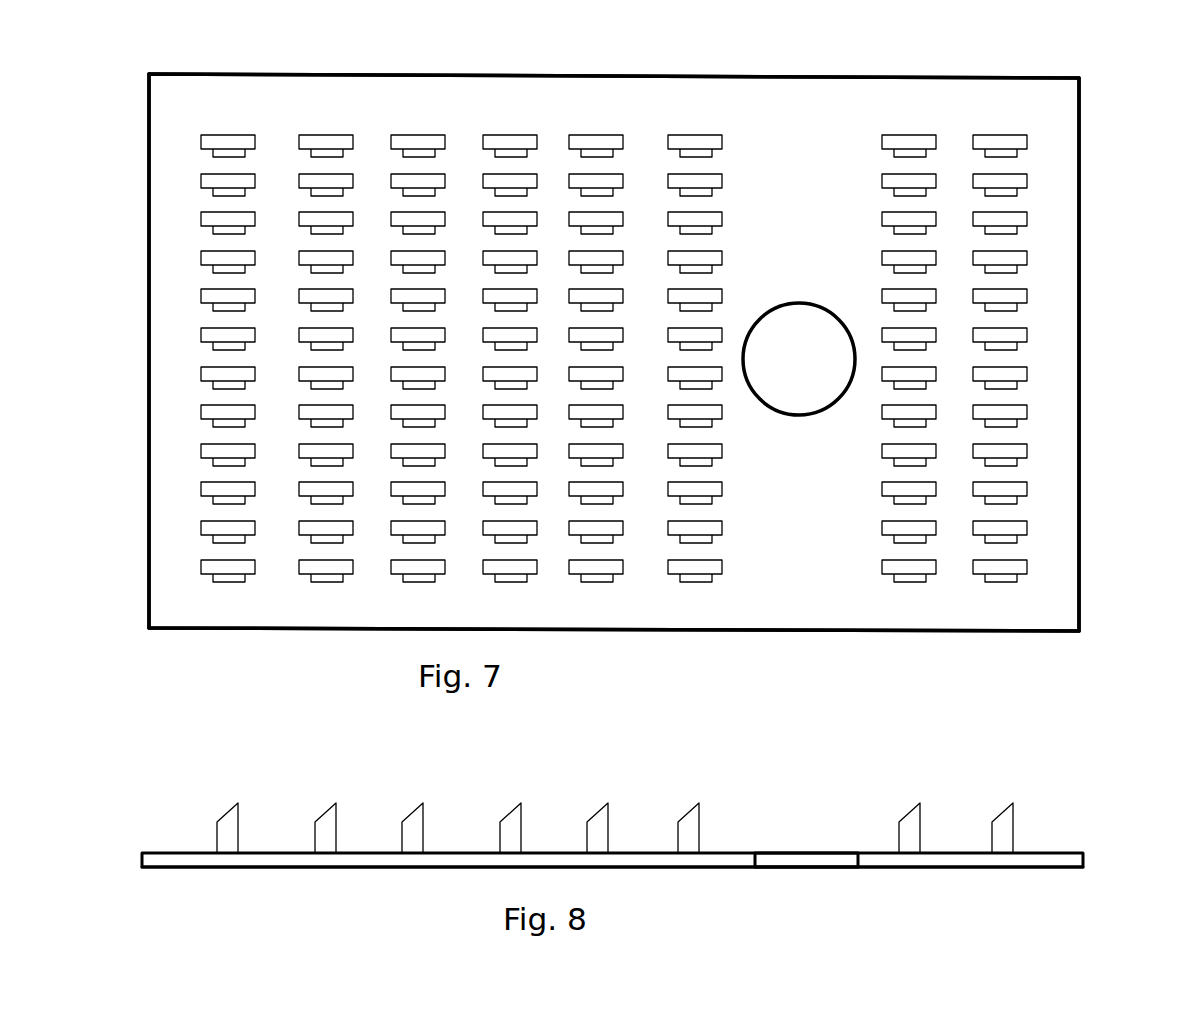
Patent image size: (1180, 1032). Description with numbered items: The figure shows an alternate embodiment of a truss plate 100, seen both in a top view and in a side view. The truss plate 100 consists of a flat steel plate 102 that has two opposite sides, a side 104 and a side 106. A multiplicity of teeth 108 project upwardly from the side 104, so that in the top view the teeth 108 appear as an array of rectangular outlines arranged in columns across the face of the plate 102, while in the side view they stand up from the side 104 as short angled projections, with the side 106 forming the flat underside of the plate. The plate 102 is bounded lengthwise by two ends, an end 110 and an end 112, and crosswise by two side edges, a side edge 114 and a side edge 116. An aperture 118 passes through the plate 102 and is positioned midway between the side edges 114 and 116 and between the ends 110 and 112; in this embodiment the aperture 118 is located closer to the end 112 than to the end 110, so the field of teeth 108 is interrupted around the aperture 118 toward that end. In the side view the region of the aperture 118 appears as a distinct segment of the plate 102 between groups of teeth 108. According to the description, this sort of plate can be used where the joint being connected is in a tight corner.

In FIG. 7, the truss plate 100 is at (1102, 491).
In FIG. 7, the flat steel plate 102 is at (1060, 107).
In FIG. 8, the side 104 is at (1037, 853).
In FIG. 8, the side 106 is at (1022, 867).
In FIG. 7, the teeth 108 is at (1013, 427).
In FIG. 8, the teeth 108 is at (1012, 825).
In FIG. 7, the end 110 is at (147, 330).
In FIG. 7, the end 112 is at (1082, 313).
In FIG. 7, the side edge 114 is at (783, 77).
In FIG. 7, the side edge 116 is at (775, 631).
In FIG. 7, the aperture 118 is at (795, 323).
In FIG. 8, the aperture 118 is at (805, 848).